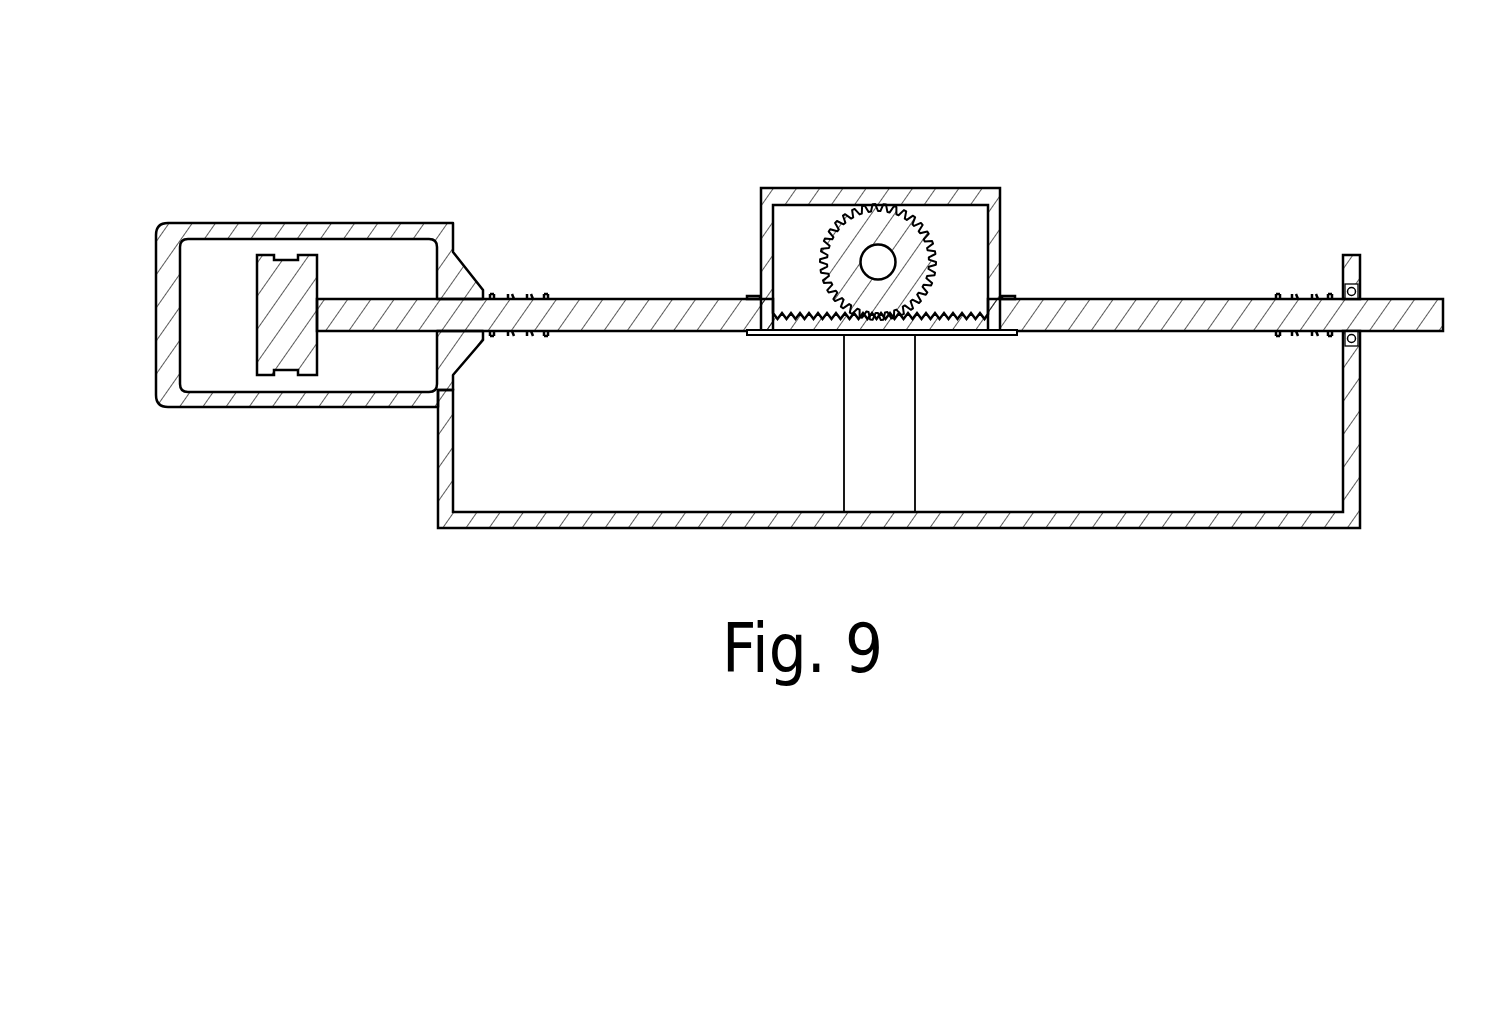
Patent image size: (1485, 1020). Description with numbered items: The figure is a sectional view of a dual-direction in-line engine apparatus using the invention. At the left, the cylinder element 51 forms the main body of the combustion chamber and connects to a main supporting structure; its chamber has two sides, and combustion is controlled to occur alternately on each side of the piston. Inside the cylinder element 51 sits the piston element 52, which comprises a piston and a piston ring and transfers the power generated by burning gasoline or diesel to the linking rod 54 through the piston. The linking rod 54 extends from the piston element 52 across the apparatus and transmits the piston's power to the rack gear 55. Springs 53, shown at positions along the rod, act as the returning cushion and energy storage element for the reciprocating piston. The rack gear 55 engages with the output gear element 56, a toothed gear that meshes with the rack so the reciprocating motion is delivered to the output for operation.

The cylinder element 51 is at (220, 223).
The piston element 52 is at (278, 295).
The springs 53 is at (503, 298).
The linking rod 54 is at (652, 312).
The rack gear 55 is at (950, 313).
The output gear element 56 is at (875, 227).